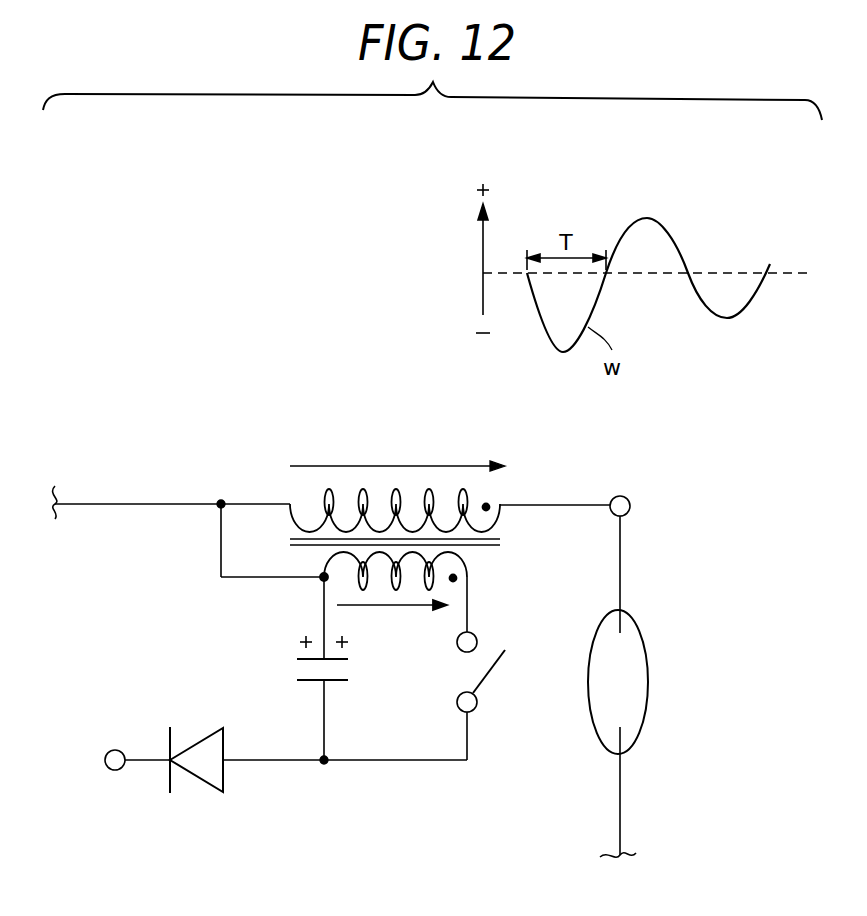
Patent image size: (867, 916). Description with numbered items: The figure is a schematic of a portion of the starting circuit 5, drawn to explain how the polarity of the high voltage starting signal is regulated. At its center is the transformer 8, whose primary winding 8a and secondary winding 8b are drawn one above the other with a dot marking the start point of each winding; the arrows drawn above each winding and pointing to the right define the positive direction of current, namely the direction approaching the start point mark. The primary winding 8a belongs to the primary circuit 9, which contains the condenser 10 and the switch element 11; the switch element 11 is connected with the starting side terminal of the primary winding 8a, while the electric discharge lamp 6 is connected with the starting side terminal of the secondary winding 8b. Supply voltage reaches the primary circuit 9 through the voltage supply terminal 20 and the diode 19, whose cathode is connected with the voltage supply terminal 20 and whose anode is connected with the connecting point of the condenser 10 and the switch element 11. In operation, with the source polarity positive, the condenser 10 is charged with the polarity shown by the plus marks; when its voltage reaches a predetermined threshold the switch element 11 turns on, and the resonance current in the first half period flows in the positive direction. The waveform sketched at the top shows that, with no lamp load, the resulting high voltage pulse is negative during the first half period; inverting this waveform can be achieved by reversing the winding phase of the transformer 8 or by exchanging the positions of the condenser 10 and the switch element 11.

The starting circuit 5 is at (316, 372).
The electric discharge lamp 6 is at (645, 634).
The transformer 8 is at (383, 493).
The primary winding 8a is at (467, 565).
The secondary winding 8b is at (500, 520).
The primary circuit 9 is at (466, 778).
The condenser 10 is at (310, 682).
The switch element 11 is at (487, 678).
The diode 19 is at (212, 732).
The voltage supply terminal 20 is at (112, 749).